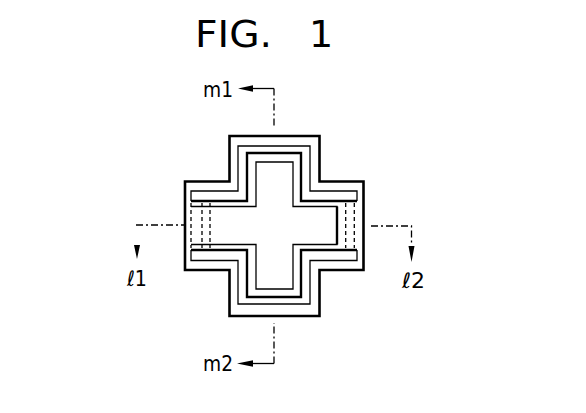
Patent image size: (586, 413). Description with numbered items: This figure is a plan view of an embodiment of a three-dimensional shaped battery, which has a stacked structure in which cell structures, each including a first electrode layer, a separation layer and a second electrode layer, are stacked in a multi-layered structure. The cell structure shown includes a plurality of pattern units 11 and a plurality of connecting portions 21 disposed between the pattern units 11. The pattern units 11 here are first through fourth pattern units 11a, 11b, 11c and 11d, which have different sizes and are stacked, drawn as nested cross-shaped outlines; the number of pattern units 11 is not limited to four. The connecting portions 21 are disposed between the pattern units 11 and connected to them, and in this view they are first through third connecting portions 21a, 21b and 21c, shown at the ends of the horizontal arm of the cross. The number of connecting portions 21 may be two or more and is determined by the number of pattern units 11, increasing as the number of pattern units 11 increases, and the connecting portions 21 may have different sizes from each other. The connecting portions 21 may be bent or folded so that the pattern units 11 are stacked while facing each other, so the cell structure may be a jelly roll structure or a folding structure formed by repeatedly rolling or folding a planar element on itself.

The pattern units 11 is at (427, 174).
The first pattern unit 11a is at (293, 162).
The second pattern unit 11b is at (366, 192).
The third pattern unit 11c is at (302, 175).
The fourth pattern unit 11d is at (332, 190).
The connecting portions 21 is at (175, 114).
The first connecting portion 21a is at (190, 217).
The second connecting portion 21b is at (352, 224).
The third connecting portion 21c is at (210, 221).